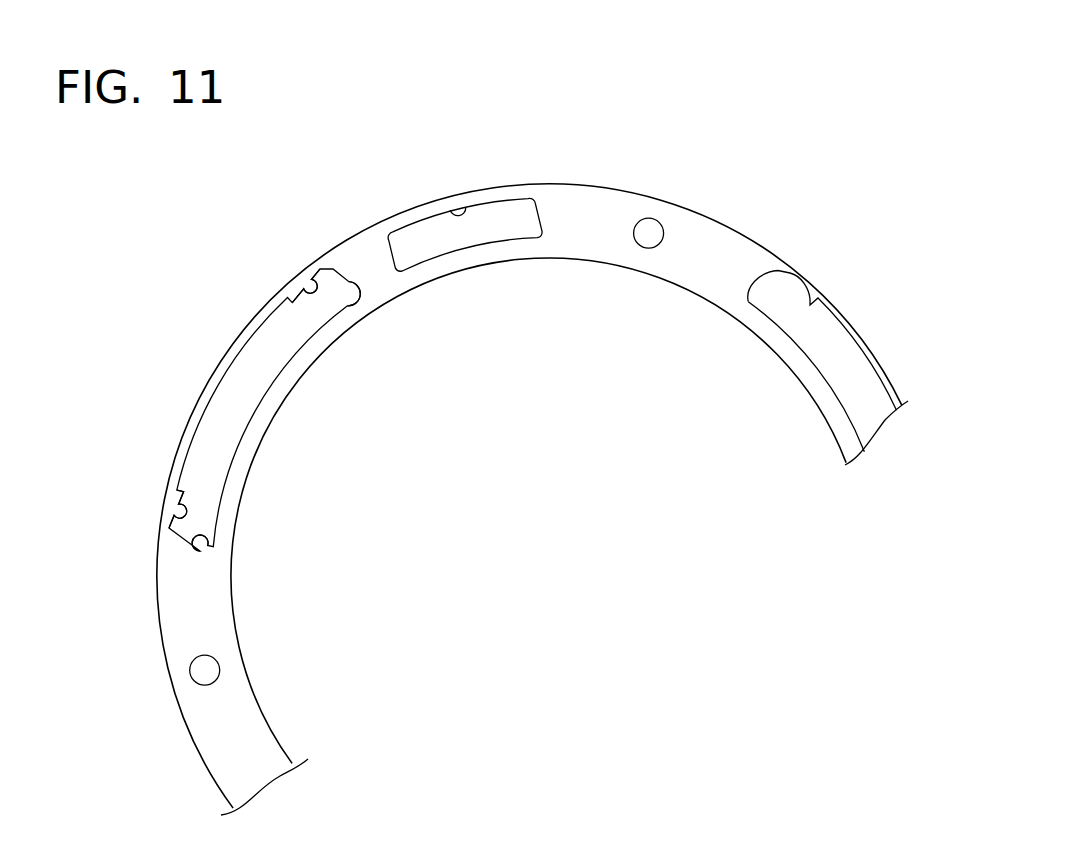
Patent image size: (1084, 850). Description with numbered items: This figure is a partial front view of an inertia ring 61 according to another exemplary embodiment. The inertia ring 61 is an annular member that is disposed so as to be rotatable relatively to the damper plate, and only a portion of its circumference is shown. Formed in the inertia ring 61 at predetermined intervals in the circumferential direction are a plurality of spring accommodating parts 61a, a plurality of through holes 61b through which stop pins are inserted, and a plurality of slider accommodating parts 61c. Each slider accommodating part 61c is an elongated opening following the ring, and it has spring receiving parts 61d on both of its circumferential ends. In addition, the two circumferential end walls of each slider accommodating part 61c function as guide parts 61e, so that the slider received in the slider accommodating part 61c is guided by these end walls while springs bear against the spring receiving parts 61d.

The inertia ring 61 is at (763, 242).
The spring accommodating part 61a is at (451, 209).
The through hole 61b is at (648, 236).
The slider accommodating part 61c is at (243, 389).
The spring receiving part 61d is at (311, 281).
The guide part 61e is at (345, 297).